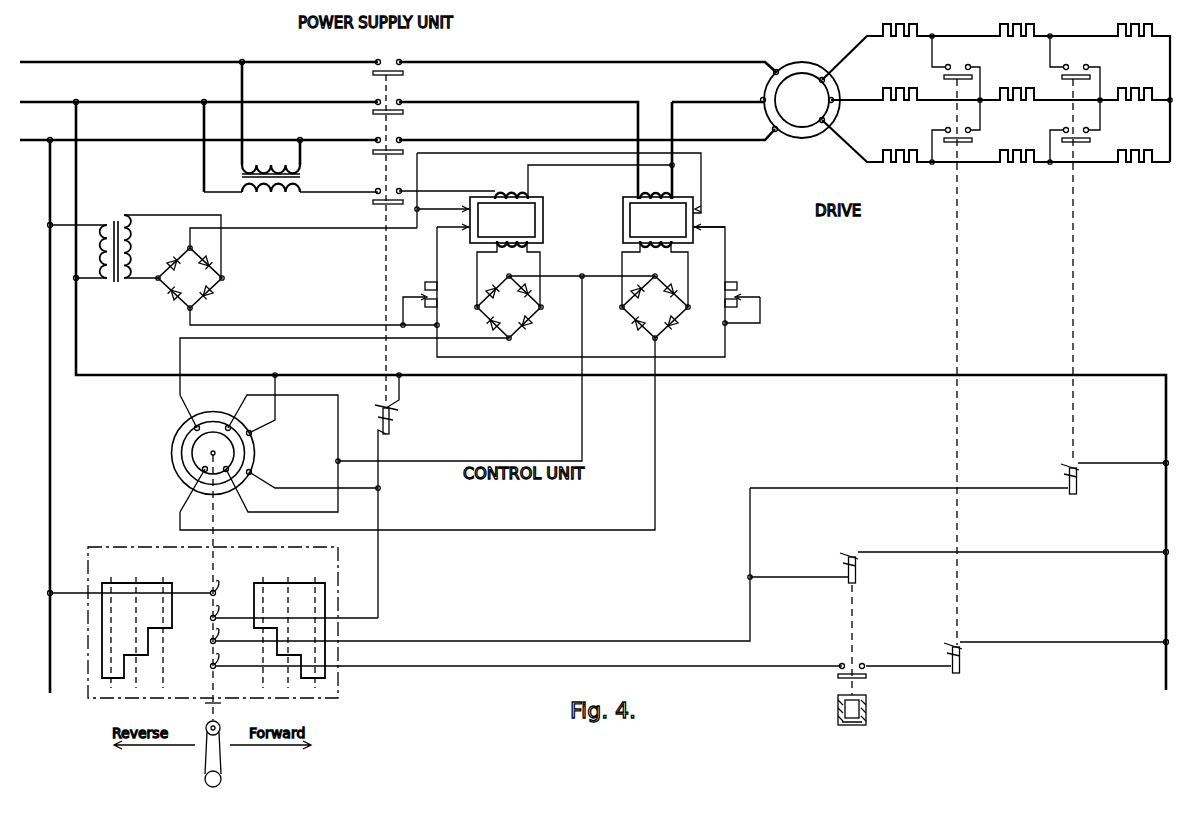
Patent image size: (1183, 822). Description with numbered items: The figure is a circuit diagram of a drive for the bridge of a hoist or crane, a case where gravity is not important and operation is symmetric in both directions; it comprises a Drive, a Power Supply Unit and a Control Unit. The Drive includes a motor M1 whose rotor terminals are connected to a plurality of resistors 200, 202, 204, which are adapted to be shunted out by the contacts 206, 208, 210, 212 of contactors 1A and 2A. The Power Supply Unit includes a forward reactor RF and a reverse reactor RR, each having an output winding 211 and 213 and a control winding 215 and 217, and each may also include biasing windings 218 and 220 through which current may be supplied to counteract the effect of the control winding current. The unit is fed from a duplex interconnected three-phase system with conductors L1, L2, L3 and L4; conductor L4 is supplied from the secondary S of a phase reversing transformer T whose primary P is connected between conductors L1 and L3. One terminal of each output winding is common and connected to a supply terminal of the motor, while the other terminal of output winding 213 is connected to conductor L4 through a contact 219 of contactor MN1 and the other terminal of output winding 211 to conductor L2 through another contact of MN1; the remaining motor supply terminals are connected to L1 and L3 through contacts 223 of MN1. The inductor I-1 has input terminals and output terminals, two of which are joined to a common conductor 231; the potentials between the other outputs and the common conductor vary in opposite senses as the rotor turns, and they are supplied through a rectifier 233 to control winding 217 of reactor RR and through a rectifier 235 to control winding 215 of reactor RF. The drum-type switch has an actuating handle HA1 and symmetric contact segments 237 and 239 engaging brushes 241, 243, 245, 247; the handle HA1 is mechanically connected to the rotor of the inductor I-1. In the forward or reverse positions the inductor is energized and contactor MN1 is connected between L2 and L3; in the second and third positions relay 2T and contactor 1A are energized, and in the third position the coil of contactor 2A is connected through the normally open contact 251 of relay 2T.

The resistor 200 is at (1130, 28).
The resistor 202 is at (1005, 28).
The resistor 204 is at (885, 28).
The contact 206 is at (1061, 132).
The contact 208 is at (1080, 64).
The contact 210 is at (945, 132).
The contact 212 is at (960, 66).
The output winding 211 is at (648, 190).
The output winding 213 is at (506, 192).
The control winding 215 is at (655, 250).
The control winding 217 is at (511, 250).
The biasing winding 218 is at (689, 217).
The contact 219 is at (375, 200).
The biasing winding 220 is at (464, 227).
The contact 223 is at (379, 61).
The common conductor 231 is at (582, 415).
The rectifier 233 is at (535, 313).
The rectifier 235 is at (680, 313).
The contact segment 237 is at (325, 676).
The contact segment 239 is at (102, 628).
The brush 241 is at (149, 586).
The brush 243 is at (212, 614).
The brush 245 is at (231, 638).
The brush 247 is at (231, 663).
The normally open contact 251 is at (858, 668).
The motor M1 is at (796, 84).
The actuating handle HA1 is at (221, 770).
The contactor MN1 is at (401, 417).
The contactor 1A is at (1078, 482).
The contactor 2A is at (963, 666).
The relay 2T is at (858, 575).
The reverse reactor RR is at (570, 236).
The forward reactor RF is at (641, 235).
The phase reversing transformer T is at (252, 180).
The primary P is at (265, 166).
The secondary S is at (277, 190).
The conductor L1 is at (109, 60).
The conductor L2 is at (111, 101).
The conductor L3 is at (115, 139).
The conductor L4 is at (343, 188).
The inductor I-1 is at (261, 546).